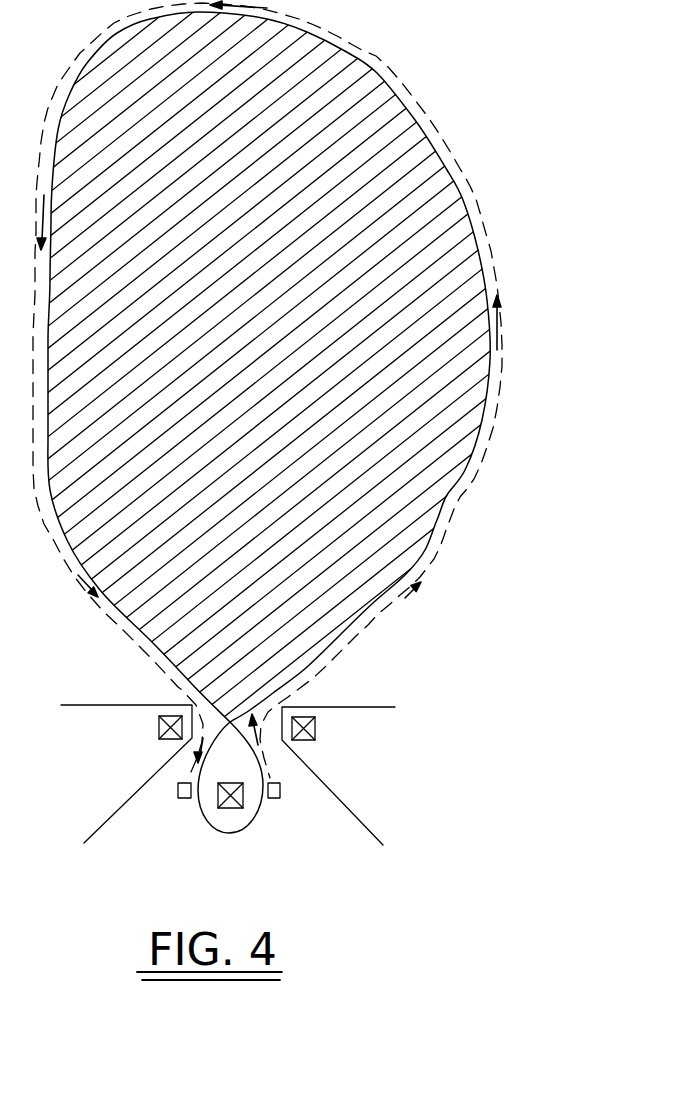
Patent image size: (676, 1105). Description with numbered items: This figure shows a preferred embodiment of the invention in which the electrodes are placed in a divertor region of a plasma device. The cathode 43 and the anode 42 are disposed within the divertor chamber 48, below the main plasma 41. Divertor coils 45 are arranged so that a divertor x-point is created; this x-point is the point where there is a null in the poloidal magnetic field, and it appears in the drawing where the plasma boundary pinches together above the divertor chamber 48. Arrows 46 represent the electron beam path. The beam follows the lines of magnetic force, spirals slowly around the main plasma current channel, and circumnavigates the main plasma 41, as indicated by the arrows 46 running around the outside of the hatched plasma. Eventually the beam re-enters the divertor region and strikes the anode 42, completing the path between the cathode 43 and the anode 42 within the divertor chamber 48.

The main plasma 41 is at (335, 107).
The anode 42 is at (183, 798).
The cathode 43 is at (274, 800).
The divertor coils 45 is at (158, 728).
The arrows 46 is at (396, 598).
The divertor chamber 48 is at (308, 812).